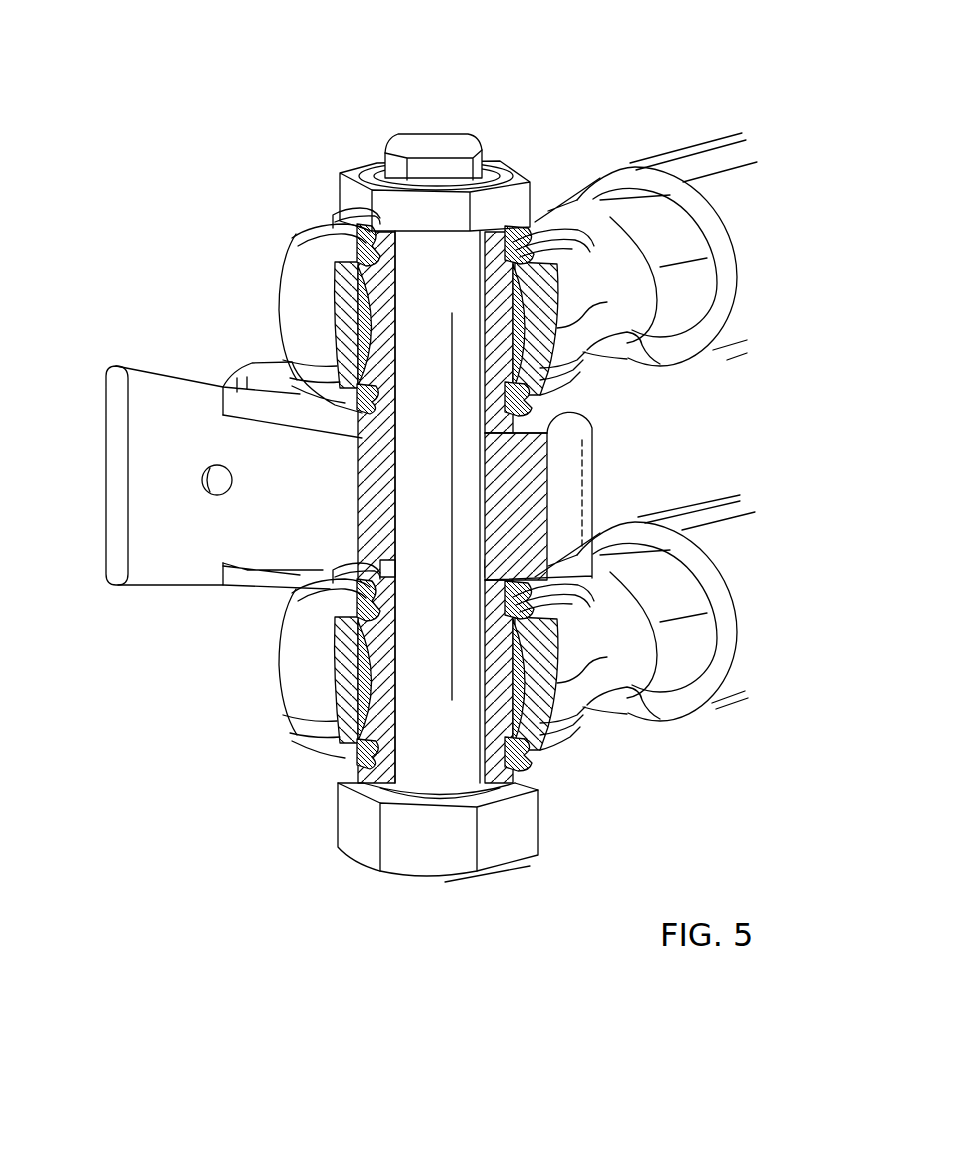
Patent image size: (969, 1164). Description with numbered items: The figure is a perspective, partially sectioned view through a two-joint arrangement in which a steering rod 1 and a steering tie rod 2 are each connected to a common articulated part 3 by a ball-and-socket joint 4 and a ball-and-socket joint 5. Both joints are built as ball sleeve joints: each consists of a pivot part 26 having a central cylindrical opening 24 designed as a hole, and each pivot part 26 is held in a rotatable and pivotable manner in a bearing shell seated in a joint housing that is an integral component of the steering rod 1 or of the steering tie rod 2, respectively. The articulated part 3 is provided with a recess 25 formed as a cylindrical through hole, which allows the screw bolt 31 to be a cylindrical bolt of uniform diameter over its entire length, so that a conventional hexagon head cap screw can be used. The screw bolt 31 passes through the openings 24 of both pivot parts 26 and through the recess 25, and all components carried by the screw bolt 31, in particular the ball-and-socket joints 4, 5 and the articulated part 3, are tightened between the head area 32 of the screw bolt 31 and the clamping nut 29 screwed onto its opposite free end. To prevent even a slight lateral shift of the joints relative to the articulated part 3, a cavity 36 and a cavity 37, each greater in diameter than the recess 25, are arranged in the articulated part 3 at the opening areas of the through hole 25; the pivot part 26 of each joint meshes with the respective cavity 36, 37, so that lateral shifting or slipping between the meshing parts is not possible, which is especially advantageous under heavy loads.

The steering rod 1 is at (626, 210).
The steering tie rod 2 is at (677, 653).
The articulated part 3 is at (160, 556).
The ball-and-socket joint 4 is at (305, 298).
The ball-and-socket joint 5 is at (303, 704).
The central cylindrical opening 24 is at (480, 318).
The recess 25 is at (498, 522).
The pivot part 26 is at (358, 298).
The clamping nut 29 is at (503, 193).
The screw bolt 31 is at (453, 407).
The head area 32 is at (506, 840).
The cavity 36 is at (514, 566).
The cavity 37 is at (504, 470).